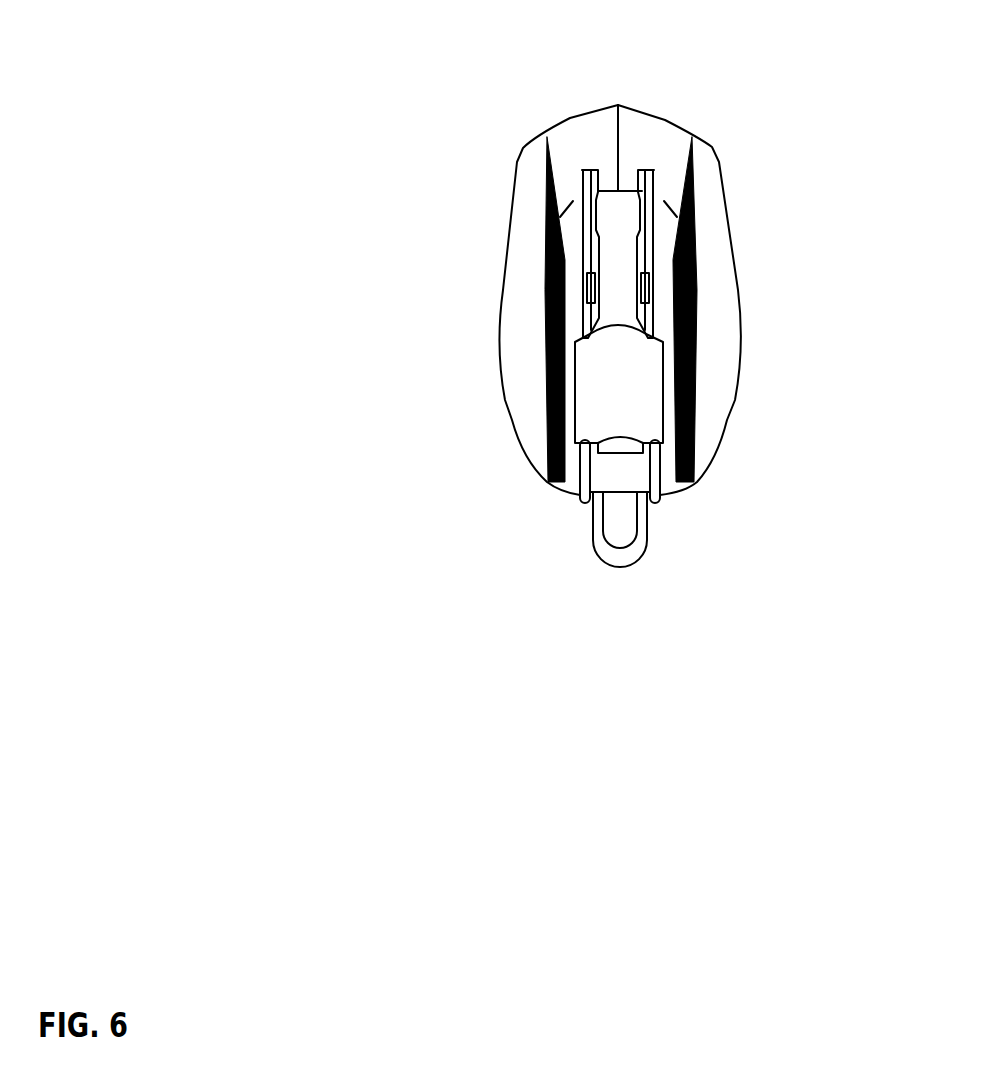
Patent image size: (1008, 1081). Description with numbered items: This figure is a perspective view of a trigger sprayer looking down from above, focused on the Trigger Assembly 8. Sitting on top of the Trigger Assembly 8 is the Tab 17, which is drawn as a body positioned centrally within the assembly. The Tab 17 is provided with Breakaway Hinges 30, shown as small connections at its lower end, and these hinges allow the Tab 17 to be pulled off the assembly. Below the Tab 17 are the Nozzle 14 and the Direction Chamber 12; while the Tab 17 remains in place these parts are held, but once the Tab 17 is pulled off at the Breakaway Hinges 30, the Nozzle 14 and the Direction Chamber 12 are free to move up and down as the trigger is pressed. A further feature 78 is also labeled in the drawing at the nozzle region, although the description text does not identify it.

The Trigger Assembly 8 is at (728, 217).
The Direction Chamber 12 is at (618, 105).
The Tab 17 is at (657, 372).
The Breakaway Hinges 30 is at (643, 453).
The Nozzle 14 is at (645, 527).
The socket cavity 78 is at (627, 552).